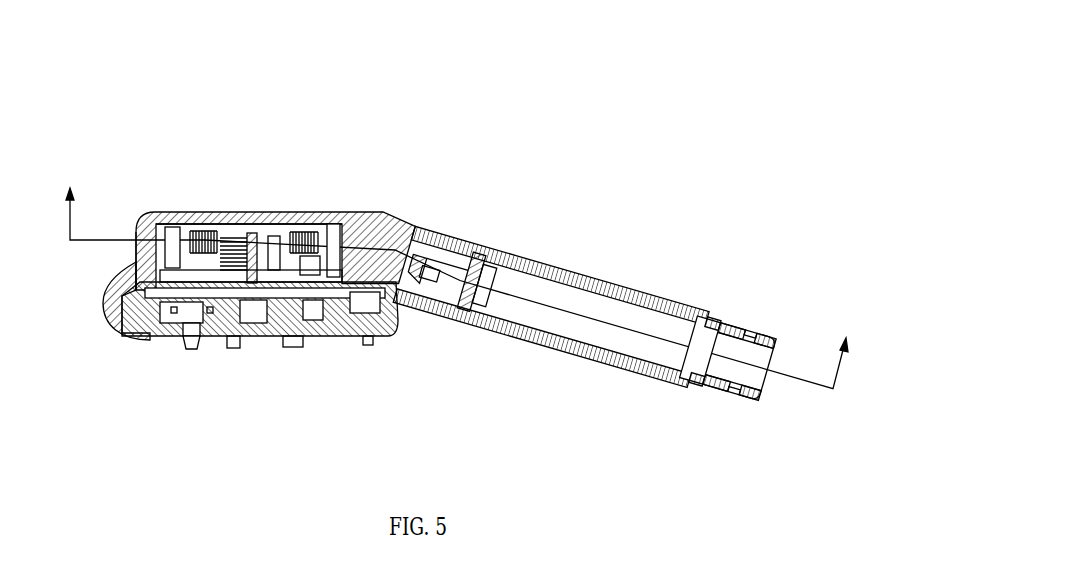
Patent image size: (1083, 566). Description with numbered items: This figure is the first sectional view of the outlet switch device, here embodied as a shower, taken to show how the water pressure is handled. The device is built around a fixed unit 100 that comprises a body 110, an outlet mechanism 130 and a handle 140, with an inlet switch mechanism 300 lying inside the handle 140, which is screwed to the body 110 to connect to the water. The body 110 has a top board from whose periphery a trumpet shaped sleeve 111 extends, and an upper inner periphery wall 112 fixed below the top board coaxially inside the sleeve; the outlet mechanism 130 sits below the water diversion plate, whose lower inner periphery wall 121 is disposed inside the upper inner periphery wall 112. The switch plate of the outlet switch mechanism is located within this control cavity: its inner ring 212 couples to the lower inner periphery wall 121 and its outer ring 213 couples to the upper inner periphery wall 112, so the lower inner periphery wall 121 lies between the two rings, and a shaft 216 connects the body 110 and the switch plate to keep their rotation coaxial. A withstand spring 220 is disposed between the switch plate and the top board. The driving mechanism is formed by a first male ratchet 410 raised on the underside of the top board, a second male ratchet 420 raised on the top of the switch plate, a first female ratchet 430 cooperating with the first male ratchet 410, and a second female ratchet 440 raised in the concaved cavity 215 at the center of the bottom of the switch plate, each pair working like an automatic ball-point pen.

The fixed unit 100 is at (282, 138).
The body 110 is at (226, 197).
The trumpet shaped sleeve 111 is at (137, 250).
The upper inner periphery wall 112 is at (155, 212).
The lower inner periphery wall 121 is at (112, 314).
The outlet mechanism 130 is at (220, 270).
The handle 140 is at (634, 292).
The inner ring 212 is at (165, 270).
The outer ring 213 is at (150, 272).
The concaved cavity 215 is at (292, 296).
The shaft 216 is at (247, 212).
The withstand spring 220 is at (222, 210).
The inlet switch mechanism 300 is at (446, 262).
The first male ratchet 410 is at (280, 212).
The second male ratchet 420 is at (272, 320).
The first female ratchet 430 is at (257, 277).
The second female ratchet 440 is at (365, 302).